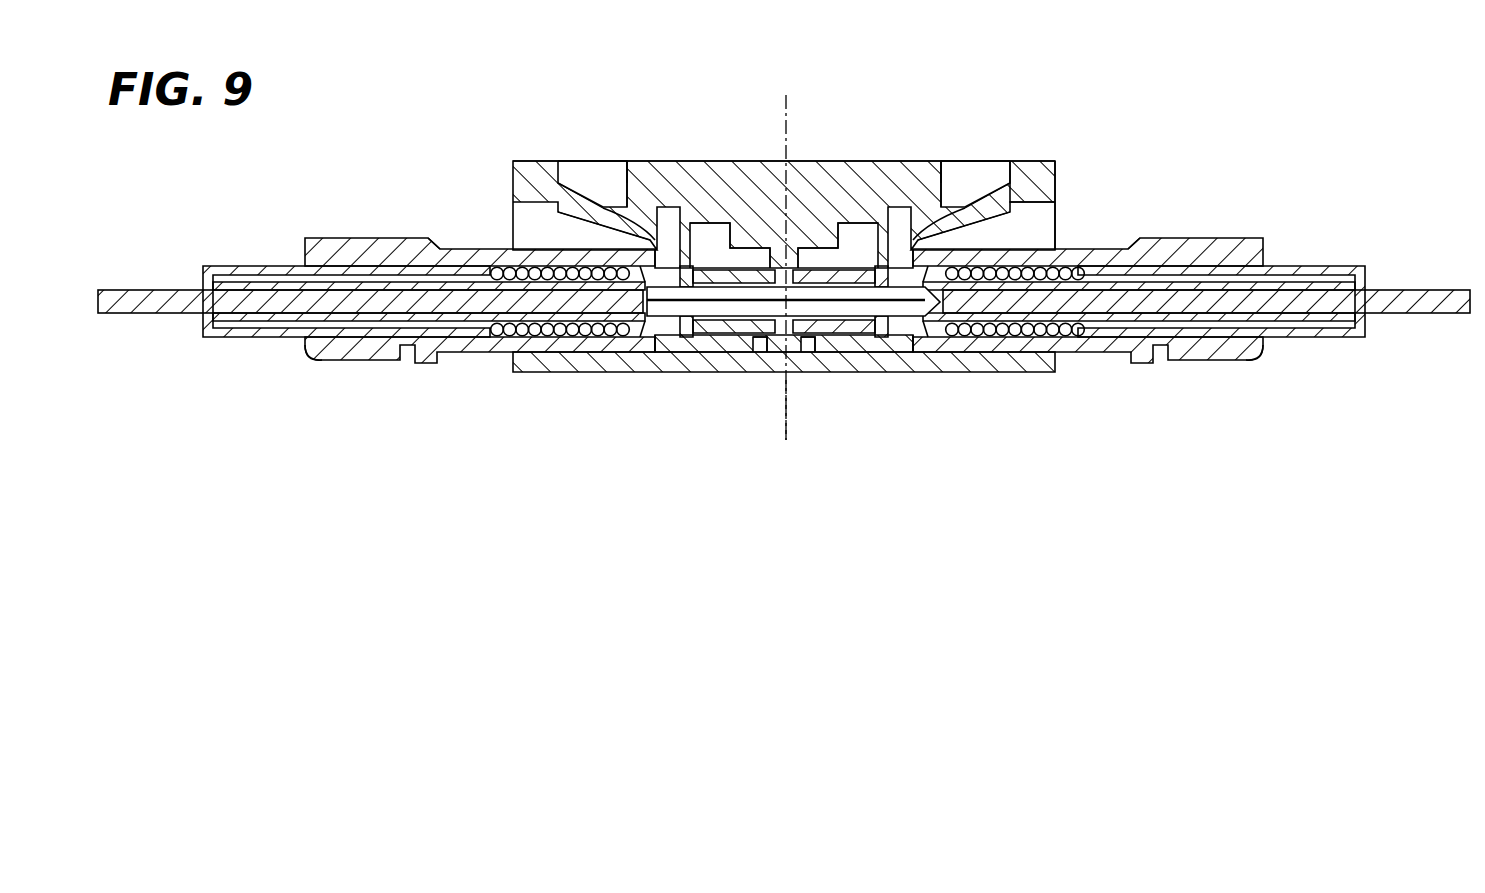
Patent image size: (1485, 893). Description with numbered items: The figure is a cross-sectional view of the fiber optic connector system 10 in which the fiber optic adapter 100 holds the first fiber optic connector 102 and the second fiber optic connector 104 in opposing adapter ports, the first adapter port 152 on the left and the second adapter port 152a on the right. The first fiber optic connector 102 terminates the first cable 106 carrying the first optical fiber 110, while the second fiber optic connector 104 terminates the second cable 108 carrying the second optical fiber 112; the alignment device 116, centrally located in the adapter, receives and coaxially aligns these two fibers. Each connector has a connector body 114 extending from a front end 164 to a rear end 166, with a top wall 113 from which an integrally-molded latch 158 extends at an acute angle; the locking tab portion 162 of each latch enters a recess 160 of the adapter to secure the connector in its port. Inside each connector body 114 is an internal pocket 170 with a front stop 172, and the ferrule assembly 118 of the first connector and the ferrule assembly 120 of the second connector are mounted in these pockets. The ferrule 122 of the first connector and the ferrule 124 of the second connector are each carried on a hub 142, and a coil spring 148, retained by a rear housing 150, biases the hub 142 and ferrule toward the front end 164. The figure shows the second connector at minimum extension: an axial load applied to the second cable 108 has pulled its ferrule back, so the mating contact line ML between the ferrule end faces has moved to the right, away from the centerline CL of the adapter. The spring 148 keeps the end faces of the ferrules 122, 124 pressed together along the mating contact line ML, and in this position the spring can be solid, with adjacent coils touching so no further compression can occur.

The fiber optic connector system 10 is at (1078, 136).
The fiber optic adapter 100 is at (1040, 160).
The first fiber optic connector 102 is at (360, 236).
The second fiber optic connector 104 is at (1215, 236).
The first cable 106 is at (147, 288).
The second cable 108 is at (1410, 290).
The first optical fiber 110 is at (653, 320).
The second optical fiber 112 is at (822, 305).
The top wall 113 is at (443, 247).
The connector body 114 is at (460, 250).
The alignment device 116 is at (858, 330).
The ferrule assembly 118 is at (670, 256).
The ferrule assembly 120 is at (898, 265).
The ferrule 122 is at (738, 295).
The ferrule 124 is at (838, 293).
The hub 142 is at (637, 324).
The spring 148 is at (505, 345).
The rear housing 150 is at (242, 263).
The first adapter port 152 is at (523, 217).
The second adapter port 152a is at (1043, 217).
The latch 158 is at (605, 217).
The recess 160 is at (582, 170).
The locking tab portion 162 is at (565, 197).
The front end 164 is at (757, 347).
The rear end 166 is at (297, 360).
The internal pocket 170 is at (687, 262).
The front stop 172 is at (661, 332).
The mating contact line ML is at (790, 148).
The centerline CL is at (783, 405).